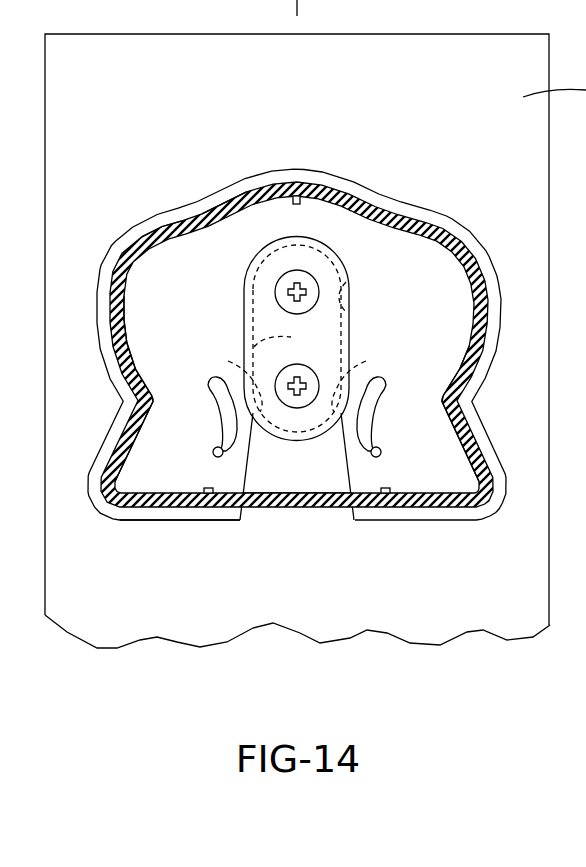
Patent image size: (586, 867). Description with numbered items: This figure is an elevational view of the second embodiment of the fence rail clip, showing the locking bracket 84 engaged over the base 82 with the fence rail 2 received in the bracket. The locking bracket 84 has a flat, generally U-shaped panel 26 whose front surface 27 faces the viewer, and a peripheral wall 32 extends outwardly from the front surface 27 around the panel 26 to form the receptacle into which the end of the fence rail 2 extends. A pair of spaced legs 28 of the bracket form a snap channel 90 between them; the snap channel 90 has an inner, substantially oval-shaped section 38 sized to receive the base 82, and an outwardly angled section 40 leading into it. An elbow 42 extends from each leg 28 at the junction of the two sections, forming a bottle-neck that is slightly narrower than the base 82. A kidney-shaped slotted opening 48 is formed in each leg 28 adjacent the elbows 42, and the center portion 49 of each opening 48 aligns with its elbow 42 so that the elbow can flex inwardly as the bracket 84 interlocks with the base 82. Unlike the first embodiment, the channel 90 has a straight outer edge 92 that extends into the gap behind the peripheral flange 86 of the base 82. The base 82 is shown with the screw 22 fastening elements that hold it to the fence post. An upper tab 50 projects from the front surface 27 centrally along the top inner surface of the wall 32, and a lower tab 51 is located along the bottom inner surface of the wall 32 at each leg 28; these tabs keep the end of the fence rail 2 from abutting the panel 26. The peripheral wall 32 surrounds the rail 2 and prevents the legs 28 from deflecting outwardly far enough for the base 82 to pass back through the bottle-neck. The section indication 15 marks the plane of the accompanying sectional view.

The fence rail 2 is at (383, 221).
The locking bracket 84 is at (456, 234).
The panel 26 is at (173, 277).
The front surface 27 is at (220, 258).
The legs 28 is at (170, 441).
The peripheral wall 32 is at (157, 518).
The screw 22 is at (276, 292).
The oval-shaped section 38 is at (352, 290).
The upper tab 50 is at (297, 204).
The peripheral flange 86 is at (244, 322).
The base 82 is at (340, 353).
The straight outer edge 92 is at (286, 338).
The elbow 42 is at (228, 361).
The center portion 49 is at (238, 416).
The kidney-shaped slotted opening 48 is at (213, 454).
The lower tab 51 is at (203, 494).
The outwardly angled section 40 is at (313, 474).
The snap channel 90 is at (318, 521).
The section line for FIG. 15 is at (300, 663).